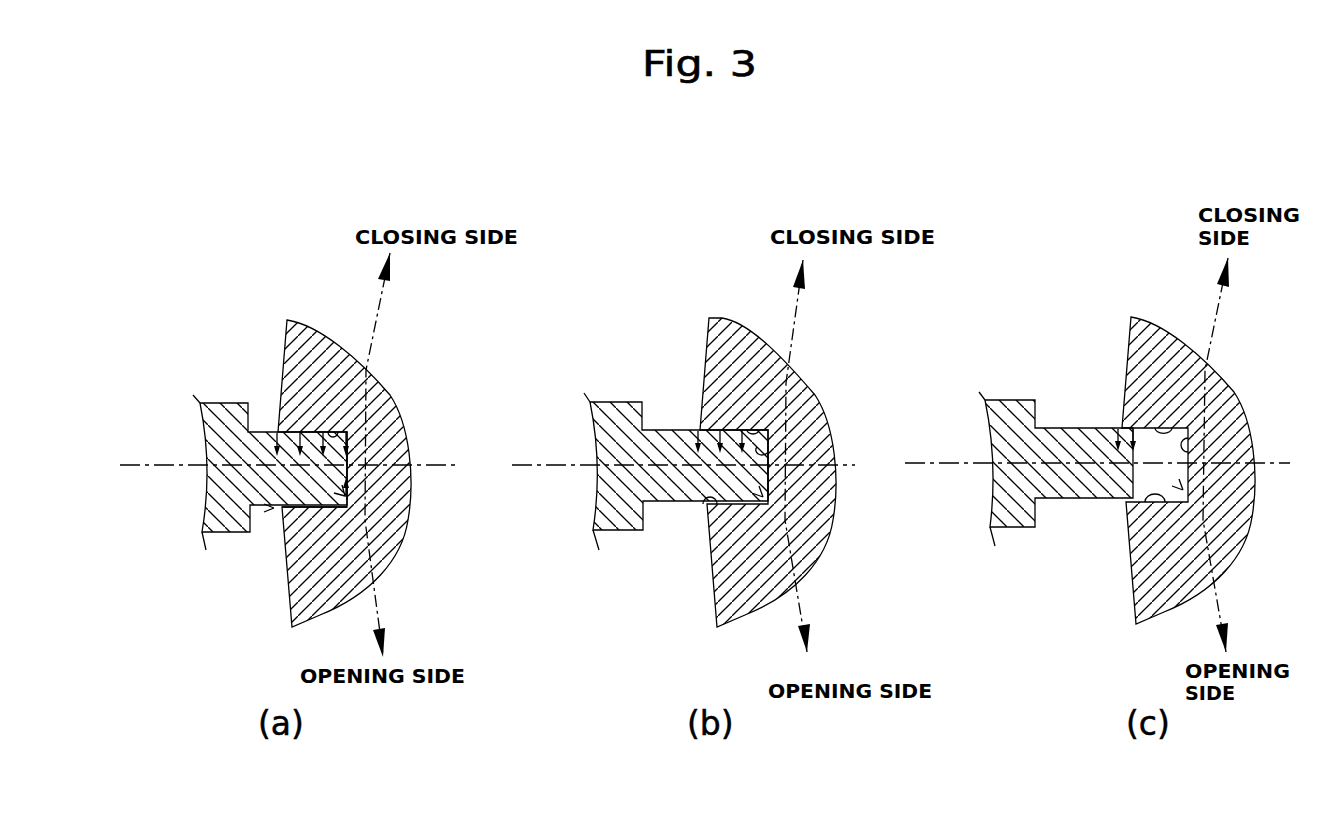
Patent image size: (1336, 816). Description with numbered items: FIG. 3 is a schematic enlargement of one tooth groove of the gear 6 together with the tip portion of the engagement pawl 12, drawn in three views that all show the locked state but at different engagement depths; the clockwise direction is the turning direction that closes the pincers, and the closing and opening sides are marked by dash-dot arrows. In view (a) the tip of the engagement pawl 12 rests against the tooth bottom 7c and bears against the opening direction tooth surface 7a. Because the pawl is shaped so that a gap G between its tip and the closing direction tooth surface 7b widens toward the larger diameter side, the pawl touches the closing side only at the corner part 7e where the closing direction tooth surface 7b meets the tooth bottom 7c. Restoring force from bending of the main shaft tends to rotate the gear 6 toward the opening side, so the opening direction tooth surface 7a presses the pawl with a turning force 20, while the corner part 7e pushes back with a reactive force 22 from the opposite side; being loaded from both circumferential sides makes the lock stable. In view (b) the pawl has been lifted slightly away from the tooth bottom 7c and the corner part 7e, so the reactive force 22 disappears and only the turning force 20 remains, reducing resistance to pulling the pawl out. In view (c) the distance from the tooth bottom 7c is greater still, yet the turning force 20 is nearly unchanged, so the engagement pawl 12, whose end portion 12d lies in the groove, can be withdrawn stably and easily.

The gear 6 is at (385, 400).
The engagement pawl 12 is at (225, 417).
The end portion of valve element 12d is at (761, 507).
The turning force 20 is at (277, 452).
The reactive force 22 is at (348, 497).
The opening direction tooth surface 7a is at (330, 432).
The closing direction tooth surface 7b is at (282, 512).
The tooth bottom 7c is at (345, 463).
The corner part 7e is at (345, 496).
The gap G is at (268, 508).